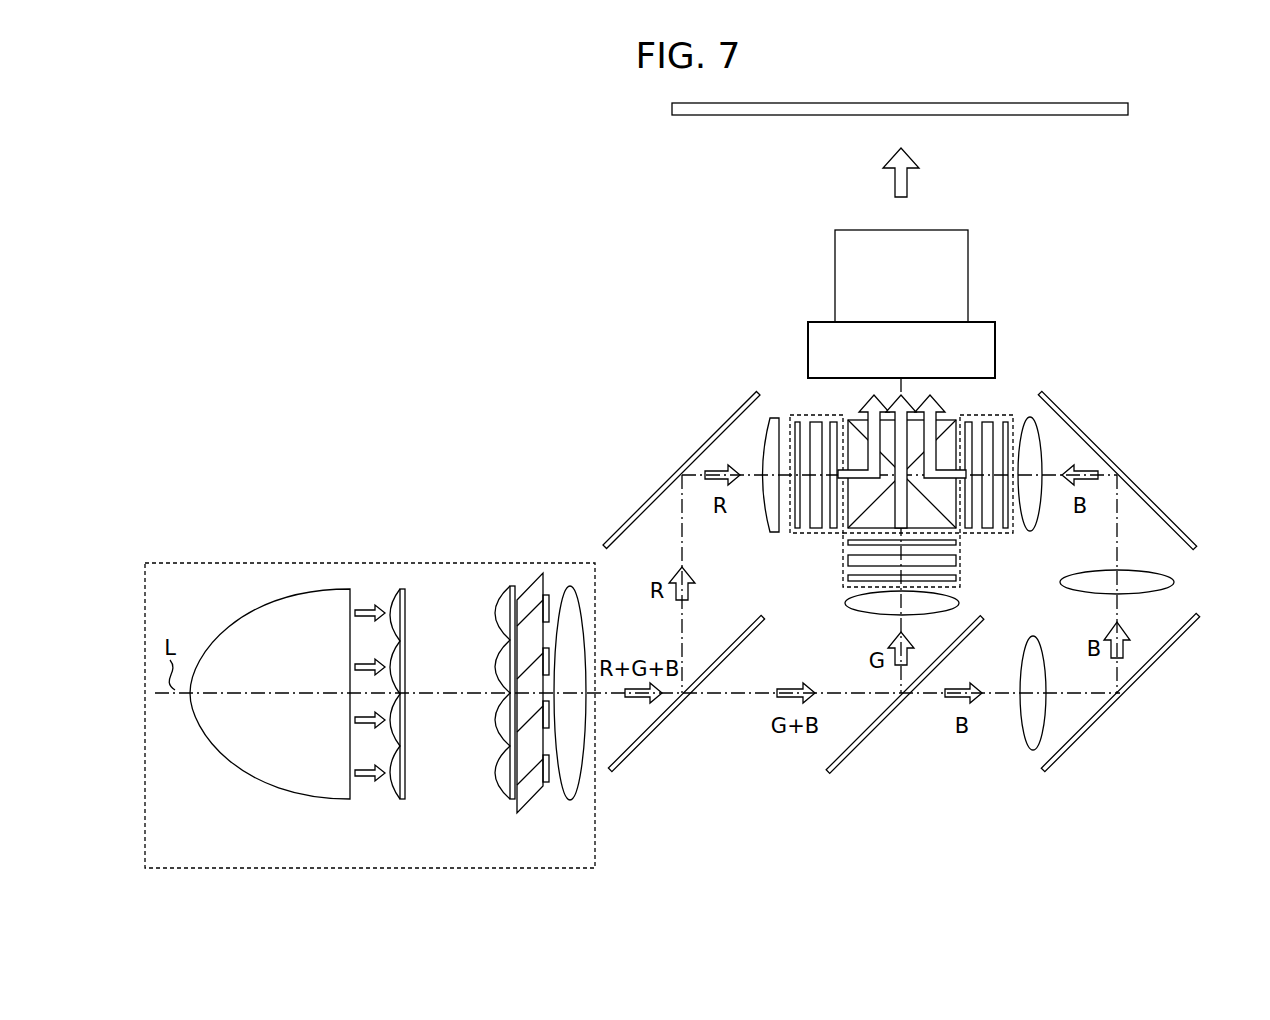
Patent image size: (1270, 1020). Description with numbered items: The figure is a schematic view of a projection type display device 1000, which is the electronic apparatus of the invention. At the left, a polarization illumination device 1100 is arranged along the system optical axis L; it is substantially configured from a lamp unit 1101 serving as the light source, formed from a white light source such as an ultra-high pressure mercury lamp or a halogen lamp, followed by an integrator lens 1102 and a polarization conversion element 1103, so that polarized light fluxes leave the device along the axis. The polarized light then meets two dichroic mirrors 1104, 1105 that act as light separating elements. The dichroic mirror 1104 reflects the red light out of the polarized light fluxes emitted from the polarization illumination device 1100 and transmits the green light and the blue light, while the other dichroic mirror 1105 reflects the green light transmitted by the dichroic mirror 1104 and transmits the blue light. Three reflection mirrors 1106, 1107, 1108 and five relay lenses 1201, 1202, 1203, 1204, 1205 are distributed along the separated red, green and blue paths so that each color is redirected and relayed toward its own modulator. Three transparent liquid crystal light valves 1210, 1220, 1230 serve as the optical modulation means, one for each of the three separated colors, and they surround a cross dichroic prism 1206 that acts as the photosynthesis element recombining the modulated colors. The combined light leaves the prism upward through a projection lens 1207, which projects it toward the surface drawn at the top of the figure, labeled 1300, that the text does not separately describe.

The projection type display device 1000 is at (1184, 236).
The polarization illumination device 1100 is at (382, 562).
The lamp unit 1101 is at (283, 778).
The integrator lens 1102 is at (396, 800).
The polarization conversion element 1103 is at (586, 822).
The dichroic mirror 1104 is at (650, 740).
The dichroic mirror 1105 is at (872, 742).
The reflection mirror 1106 is at (681, 470).
The reflection mirror 1107 is at (1085, 740).
The reflection mirror 1108 is at (1117, 470).
The relay lens 1201 is at (1033, 752).
The relay lens 1202 is at (1176, 582).
The relay lens 1203 is at (1030, 535).
The relay lens 1204 is at (843, 603).
The relay lens 1205 is at (778, 535).
The cross dichroic prism 1206 is at (950, 420).
The projection lens 1207 is at (960, 272).
The transparent liquid crystal light valve 1210 is at (793, 415).
The transparent liquid crystal light valve 1220 is at (962, 580).
The transparent liquid crystal light valve 1230 is at (1000, 415).
The screen 1300 is at (1058, 118).